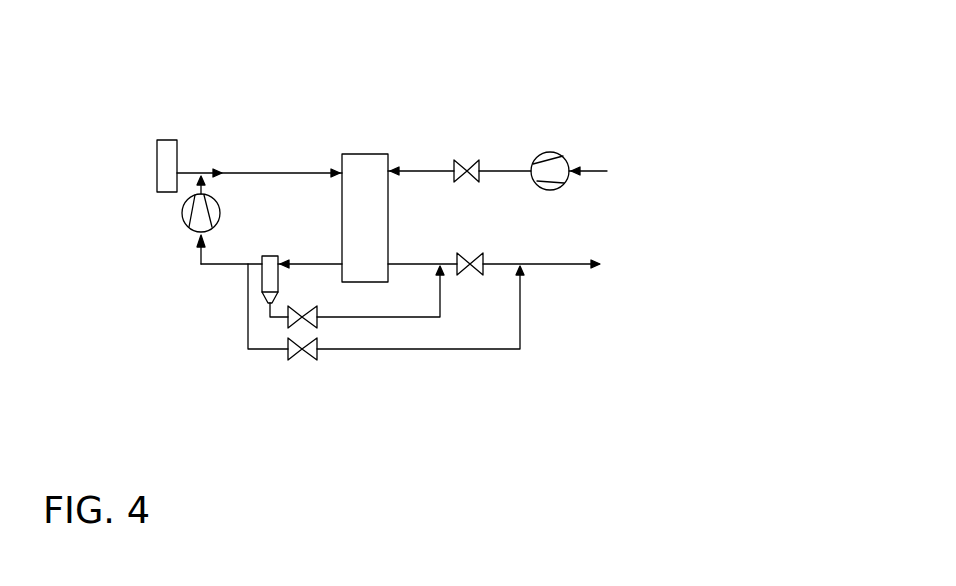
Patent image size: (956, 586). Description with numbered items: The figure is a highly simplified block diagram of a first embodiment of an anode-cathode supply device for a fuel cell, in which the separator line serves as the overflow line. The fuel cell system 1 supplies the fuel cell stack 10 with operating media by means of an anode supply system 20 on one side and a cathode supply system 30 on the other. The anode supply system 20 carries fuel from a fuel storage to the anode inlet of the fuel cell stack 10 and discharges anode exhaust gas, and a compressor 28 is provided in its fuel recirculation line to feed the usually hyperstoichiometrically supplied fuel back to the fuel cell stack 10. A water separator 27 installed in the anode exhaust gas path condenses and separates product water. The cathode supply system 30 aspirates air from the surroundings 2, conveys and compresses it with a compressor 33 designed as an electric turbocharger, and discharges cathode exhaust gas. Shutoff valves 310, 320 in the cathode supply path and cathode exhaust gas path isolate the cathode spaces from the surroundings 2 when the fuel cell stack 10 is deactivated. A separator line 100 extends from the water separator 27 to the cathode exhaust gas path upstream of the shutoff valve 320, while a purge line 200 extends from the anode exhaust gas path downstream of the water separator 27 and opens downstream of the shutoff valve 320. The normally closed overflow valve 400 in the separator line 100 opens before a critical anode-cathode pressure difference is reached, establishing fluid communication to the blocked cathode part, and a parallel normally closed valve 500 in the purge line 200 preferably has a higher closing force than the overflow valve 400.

The fuel cell system 1 is at (370, 52).
The surroundings 2 is at (646, 176).
The fuel cell stack 10 is at (358, 163).
The anode supply system 20 is at (266, 85).
The water separator 27 is at (267, 297).
The compressor 28 is at (182, 217).
The cathode supply system 30 is at (430, 82).
The compressor 33 is at (552, 152).
The separator line 100 is at (433, 317).
The purge line 200 is at (502, 349).
The shutoff valve 310 is at (477, 175).
The shutoff valve 320 is at (483, 262).
The overflow valve 400 is at (317, 322).
The valve 500 is at (313, 357).